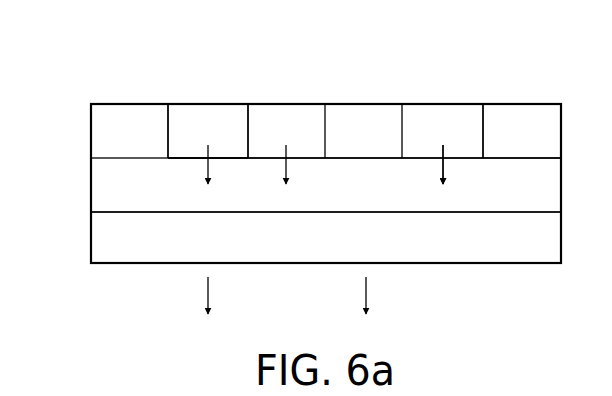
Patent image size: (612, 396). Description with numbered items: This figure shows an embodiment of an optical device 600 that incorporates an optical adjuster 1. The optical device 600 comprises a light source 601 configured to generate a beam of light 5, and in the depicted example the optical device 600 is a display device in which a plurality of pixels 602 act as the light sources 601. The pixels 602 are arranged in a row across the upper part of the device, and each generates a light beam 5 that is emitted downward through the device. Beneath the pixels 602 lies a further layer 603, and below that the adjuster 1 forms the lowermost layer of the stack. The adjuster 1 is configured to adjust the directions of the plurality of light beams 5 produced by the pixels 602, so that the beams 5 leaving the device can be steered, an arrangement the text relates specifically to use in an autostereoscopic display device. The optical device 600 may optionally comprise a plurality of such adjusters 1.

The optical device 600 is at (77, 82).
The light source 601 is at (227, 108).
The pixel 602 is at (188, 108).
The intermediate layer 603 is at (95, 183).
The adjuster 1 is at (96, 238).
The beam of light 5 is at (444, 163).